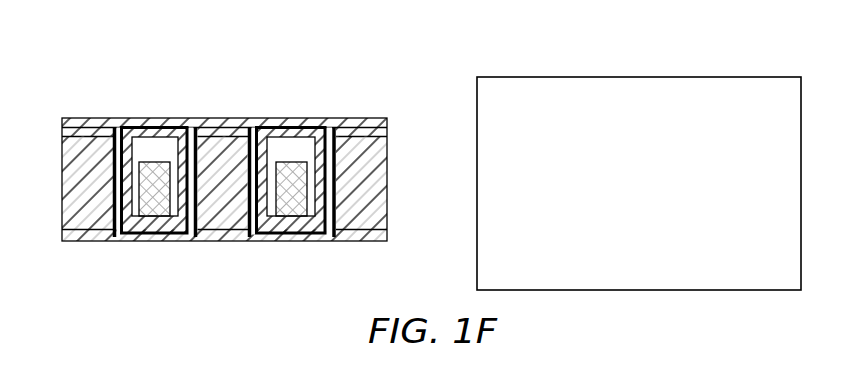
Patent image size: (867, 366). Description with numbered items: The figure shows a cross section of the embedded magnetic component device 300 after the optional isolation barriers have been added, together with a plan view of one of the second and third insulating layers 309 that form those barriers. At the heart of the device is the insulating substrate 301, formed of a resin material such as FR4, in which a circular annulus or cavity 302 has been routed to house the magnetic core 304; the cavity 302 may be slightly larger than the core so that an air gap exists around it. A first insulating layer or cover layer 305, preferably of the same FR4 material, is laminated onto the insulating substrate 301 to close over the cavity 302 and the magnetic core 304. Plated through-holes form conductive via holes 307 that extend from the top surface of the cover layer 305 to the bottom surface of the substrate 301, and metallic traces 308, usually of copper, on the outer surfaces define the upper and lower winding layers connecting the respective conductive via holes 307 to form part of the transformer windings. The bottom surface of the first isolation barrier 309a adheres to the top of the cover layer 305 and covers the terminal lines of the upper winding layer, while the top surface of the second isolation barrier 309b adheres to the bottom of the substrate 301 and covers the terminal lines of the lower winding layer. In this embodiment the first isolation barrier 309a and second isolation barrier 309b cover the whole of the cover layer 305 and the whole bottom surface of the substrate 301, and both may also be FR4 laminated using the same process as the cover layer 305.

The embedded magnetic component device 300 is at (262, 75).
The insulating substrate 301 is at (222, 146).
The cavity 302 is at (165, 145).
The magnetic core 304 is at (164, 208).
The cover layer 305 is at (363, 131).
The conductive via holes 307 is at (113, 222).
The metallic traces 308 is at (135, 130).
The second and third insulating layers 309 is at (503, 92).
The first isolation barrier 309a is at (96, 122).
The second isolation barrier 309b is at (222, 242).